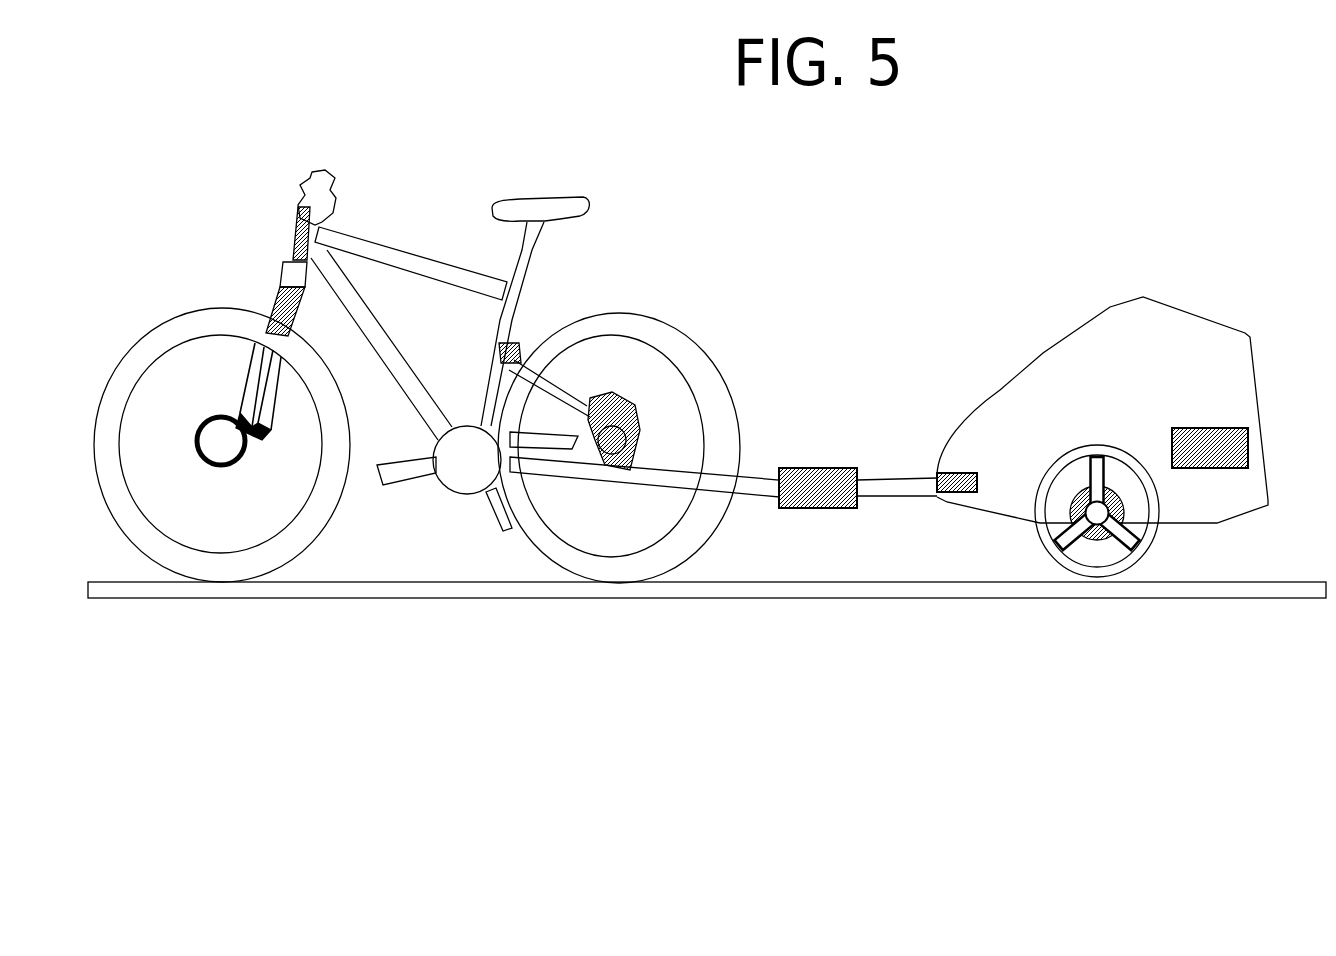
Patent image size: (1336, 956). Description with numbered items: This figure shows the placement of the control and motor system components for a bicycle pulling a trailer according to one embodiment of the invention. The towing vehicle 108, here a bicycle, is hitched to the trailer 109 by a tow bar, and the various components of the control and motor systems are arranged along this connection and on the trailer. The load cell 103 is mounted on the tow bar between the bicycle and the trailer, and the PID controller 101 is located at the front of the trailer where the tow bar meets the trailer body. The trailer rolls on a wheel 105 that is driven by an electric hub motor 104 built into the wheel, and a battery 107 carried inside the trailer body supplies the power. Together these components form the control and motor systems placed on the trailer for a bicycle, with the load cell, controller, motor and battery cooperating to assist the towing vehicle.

The PID controller 101 is at (958, 492).
The load cell 103 is at (818, 487).
The electric hub motor 104 is at (1095, 535).
The wheel 105 is at (1142, 550).
The battery 107 is at (1210, 453).
The towing vehicle 108 is at (417, 272).
The trailer 109 is at (1095, 358).